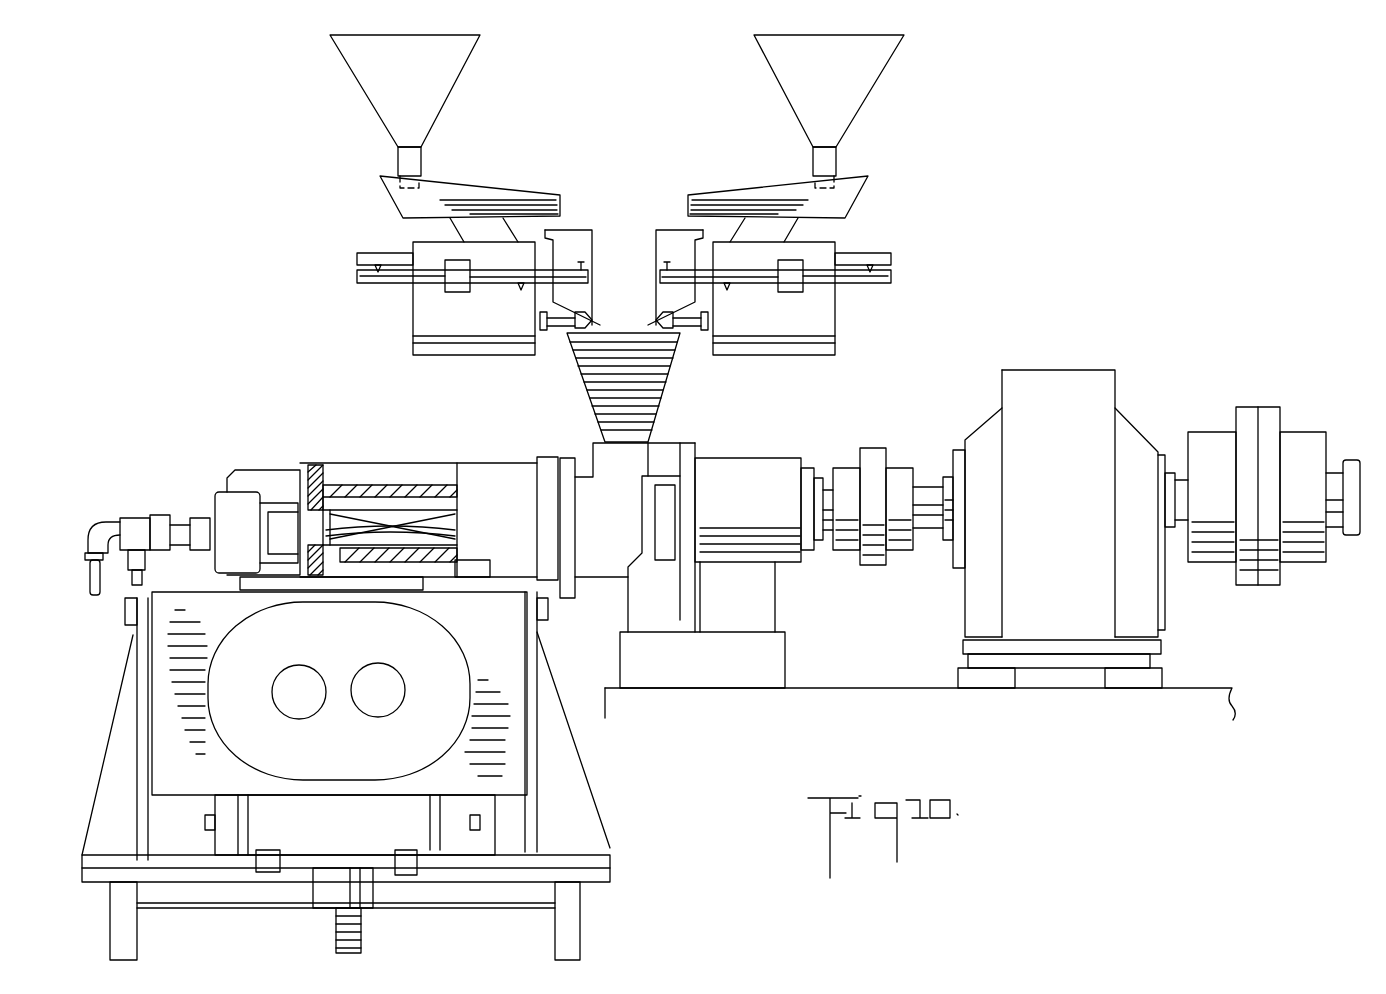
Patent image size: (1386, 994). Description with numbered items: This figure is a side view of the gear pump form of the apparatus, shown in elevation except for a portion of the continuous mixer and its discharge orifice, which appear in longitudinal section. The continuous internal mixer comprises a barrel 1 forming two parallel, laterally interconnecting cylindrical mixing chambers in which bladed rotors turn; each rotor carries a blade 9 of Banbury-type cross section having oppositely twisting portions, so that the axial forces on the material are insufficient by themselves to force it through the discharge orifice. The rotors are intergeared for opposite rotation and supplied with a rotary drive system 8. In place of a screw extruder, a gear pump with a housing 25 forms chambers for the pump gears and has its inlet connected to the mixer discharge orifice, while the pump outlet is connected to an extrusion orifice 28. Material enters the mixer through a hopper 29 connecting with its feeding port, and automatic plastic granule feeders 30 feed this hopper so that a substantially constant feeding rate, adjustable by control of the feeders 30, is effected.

The barrel 1 is at (510, 467).
The rotary drive system 8 is at (886, 458).
The blade 9 is at (386, 505).
The housing 25 is at (162, 634).
The extrusion orifice 28 is at (337, 928).
The hopper 29 is at (653, 393).
The automatic plastic granule feeders 30 is at (708, 181).